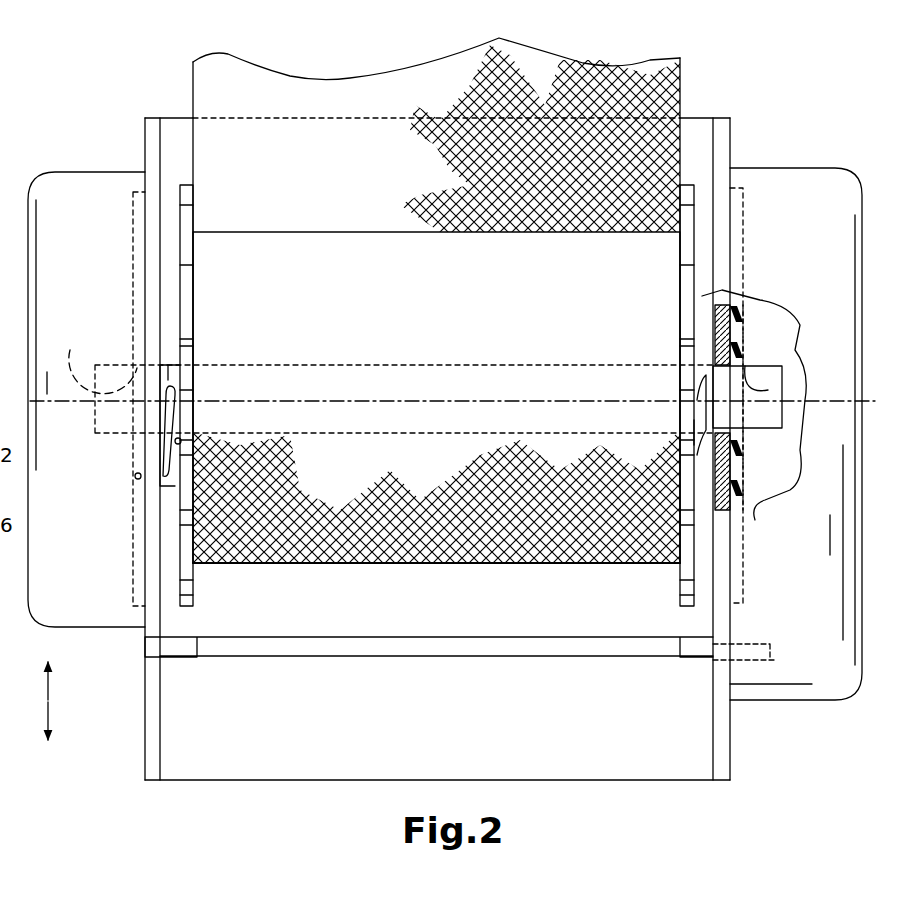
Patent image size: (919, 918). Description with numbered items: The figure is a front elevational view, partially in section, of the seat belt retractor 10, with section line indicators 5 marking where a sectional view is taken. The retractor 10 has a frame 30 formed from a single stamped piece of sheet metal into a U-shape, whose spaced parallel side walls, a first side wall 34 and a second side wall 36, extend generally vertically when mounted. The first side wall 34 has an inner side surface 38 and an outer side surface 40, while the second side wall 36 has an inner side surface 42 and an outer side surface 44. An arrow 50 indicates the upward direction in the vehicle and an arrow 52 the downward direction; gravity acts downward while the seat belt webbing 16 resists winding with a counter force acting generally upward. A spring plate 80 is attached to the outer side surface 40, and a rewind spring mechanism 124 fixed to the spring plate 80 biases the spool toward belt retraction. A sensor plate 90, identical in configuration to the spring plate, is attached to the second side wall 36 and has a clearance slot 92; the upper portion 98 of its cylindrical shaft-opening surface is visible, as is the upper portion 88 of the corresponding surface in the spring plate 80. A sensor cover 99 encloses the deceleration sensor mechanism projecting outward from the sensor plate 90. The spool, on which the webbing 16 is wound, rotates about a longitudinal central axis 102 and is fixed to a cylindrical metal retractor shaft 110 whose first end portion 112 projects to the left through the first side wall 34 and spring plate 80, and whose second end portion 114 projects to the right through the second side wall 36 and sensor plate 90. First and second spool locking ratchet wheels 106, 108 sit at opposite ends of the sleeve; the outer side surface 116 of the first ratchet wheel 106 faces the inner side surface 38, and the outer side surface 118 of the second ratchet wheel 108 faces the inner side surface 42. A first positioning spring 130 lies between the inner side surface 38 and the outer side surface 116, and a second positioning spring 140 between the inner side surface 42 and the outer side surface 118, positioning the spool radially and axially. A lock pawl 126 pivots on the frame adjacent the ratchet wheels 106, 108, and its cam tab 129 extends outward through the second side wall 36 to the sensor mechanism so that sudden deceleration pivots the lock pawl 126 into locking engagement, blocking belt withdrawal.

The section line 5- 5 is at (128, 123).
The retractor 10 is at (703, 43).
The seat belt webbing 16 is at (275, 105).
The frame 30 is at (738, 112).
The first side wall 34 is at (143, 750).
The second side wall 36 is at (735, 722).
The inner side surface 38 is at (160, 145).
The outer side surface 40 is at (145, 153).
The inner side surface 42 is at (716, 150).
The outer side surface 44 is at (730, 155).
The arrow 50 is at (48, 688).
The arrow 52 is at (48, 712).
The spring plate 80 is at (126, 608).
The upper portion 88 is at (101, 350).
The sensor plate 90 is at (752, 308).
The clearance slot 92 is at (748, 493).
The upper portion 98 is at (770, 368).
The sensor cover 99 is at (848, 192).
The longitudinal central axis 102 is at (877, 400).
The first spool locking ratchet wheel 106 is at (198, 280).
The second spool locking ratchet wheel 108 is at (676, 253).
The retractor shaft 110 is at (757, 440).
The first end portion 112 is at (120, 438).
The second end portion 114 is at (760, 410).
The outer side surface 116 is at (180, 233).
The outer side surface 118 is at (694, 235).
The rewind spring mechanism 124 is at (63, 170).
The lock pawl 126 is at (420, 640).
The cam tab 129 is at (765, 656).
The first positioning spring 130 is at (178, 462).
The second positioning spring 140 is at (700, 450).